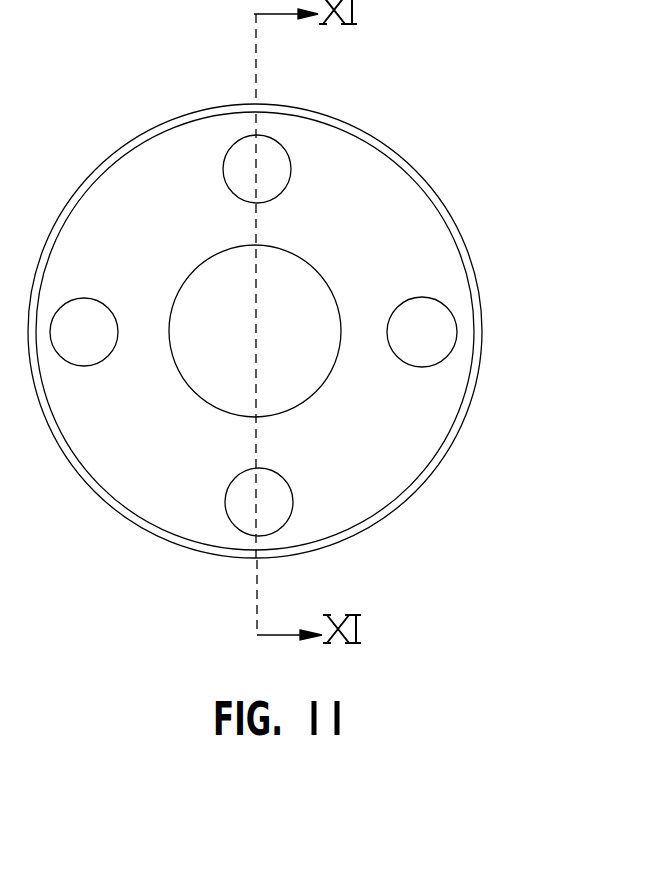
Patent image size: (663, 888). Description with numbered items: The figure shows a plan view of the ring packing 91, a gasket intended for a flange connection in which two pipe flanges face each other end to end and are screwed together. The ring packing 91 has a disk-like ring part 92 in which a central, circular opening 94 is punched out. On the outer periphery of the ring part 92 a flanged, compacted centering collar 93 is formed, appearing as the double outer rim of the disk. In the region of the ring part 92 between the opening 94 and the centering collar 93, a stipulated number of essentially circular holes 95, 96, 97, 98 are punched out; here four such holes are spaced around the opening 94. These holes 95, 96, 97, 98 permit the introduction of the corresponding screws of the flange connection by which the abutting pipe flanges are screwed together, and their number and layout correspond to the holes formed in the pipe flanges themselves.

The ring packing 91 is at (129, 124).
The ring part 92 is at (143, 192).
The centering collar 93 is at (421, 178).
The opening 94 is at (210, 370).
The hole 95 is at (280, 173).
The hole 96 is at (422, 325).
The hole 97 is at (277, 493).
The hole 98 is at (95, 315).